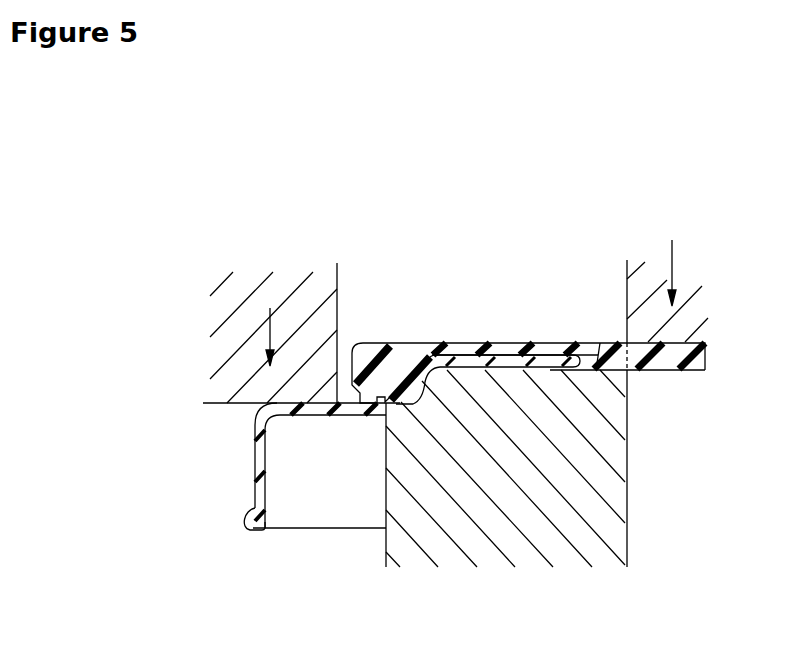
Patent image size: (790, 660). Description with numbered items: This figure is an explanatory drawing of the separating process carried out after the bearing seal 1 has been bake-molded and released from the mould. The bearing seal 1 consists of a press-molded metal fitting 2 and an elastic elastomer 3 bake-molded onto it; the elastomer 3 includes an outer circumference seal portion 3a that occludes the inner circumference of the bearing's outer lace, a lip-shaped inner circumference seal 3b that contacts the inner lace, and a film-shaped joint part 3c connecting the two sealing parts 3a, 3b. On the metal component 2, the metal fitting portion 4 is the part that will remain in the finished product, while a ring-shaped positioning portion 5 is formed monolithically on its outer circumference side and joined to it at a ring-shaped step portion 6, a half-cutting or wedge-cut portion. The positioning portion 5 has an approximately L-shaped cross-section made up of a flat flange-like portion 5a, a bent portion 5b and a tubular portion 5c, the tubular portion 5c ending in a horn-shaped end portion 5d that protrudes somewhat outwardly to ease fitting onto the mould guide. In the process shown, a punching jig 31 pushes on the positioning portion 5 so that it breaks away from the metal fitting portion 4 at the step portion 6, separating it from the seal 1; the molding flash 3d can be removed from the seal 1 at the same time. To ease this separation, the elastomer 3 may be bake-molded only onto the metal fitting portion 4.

The bearing seal 1 is at (537, 336).
The metal fitting 2 is at (485, 343).
The elastic elastomer 3 is at (448, 343).
The outer circumference seal portion 3a is at (395, 344).
The inner circumference seal 3b is at (614, 371).
The joint part 3c is at (502, 343).
The molding flash 3d is at (667, 371).
The metal fitting portion 4 is at (516, 371).
The positioning portion 5 is at (255, 495).
The flat portion 5a is at (322, 415).
The bent portion 5b is at (256, 421).
The tubular portion 5c is at (255, 458).
The end portion 5d is at (242, 528).
The step portion 6 is at (365, 415).
The punching jig 31 is at (633, 565).